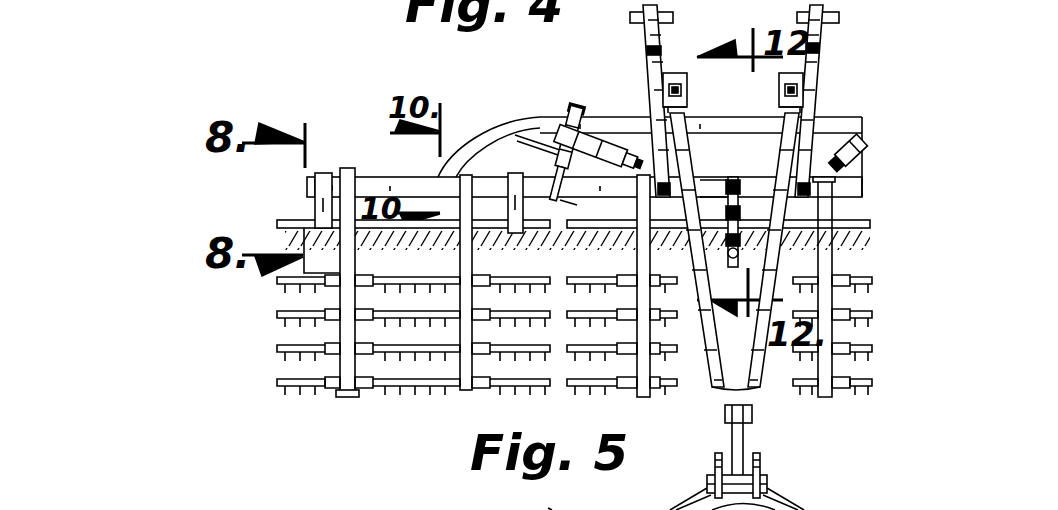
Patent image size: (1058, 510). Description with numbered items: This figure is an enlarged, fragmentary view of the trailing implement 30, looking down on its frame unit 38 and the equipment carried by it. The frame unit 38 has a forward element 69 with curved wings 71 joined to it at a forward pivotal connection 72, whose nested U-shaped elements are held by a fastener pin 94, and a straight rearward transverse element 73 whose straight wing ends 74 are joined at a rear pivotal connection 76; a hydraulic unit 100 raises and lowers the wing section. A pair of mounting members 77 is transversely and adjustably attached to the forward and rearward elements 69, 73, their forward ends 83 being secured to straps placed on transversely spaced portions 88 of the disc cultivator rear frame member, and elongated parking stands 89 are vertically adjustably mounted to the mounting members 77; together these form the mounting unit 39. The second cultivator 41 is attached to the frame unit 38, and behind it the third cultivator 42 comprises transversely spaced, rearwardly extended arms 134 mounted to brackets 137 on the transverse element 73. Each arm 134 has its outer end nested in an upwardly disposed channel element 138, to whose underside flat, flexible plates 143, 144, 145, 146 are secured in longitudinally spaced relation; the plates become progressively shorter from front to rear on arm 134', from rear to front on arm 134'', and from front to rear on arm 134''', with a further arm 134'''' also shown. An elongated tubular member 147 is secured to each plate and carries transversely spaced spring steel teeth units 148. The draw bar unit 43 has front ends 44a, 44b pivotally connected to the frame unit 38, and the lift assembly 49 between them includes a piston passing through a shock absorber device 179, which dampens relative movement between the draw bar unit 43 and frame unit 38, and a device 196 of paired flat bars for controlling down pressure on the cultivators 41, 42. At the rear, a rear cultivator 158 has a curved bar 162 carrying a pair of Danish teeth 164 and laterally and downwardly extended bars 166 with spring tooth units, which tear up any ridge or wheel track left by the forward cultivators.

The implement 30 is at (452, 79).
The frame unit 38 is at (869, 89).
The mounting unit 39 is at (849, 47).
The second cultivator 41 is at (274, 211).
The third cultivator 42 is at (274, 396).
The draw bar unit 43 is at (707, 392).
The front end of draw bar unit 44a is at (668, 107).
The front end of draw bar unit 44b is at (800, 110).
The lift assembly 49 is at (717, 204).
The forward element 69 is at (718, 119).
The curved wings 71 is at (478, 145).
The forward pivotal connection 72 is at (566, 105).
The rearward transverse element 73 is at (762, 179).
The wing ends 74 is at (382, 184).
The rear pivotal connection 76 is at (574, 203).
The mounting members 77 is at (647, 58).
The forward ends of mounting members 83 is at (660, 43).
The transversely spaced portions 88 is at (633, 22).
The parking stands 89 is at (663, 82).
The fastener pin 94 is at (548, 509).
The hydraulic unit 100 is at (617, 142).
The arms 134 is at (876, 238).
The arm 134' is at (387, 245).
The arm 134'' is at (531, 282).
The arm 134''' is at (616, 305).
The vertical post 134'''' is at (845, 367).
The brackets 137 is at (330, 173).
The channel element 138 is at (343, 397).
The flexible plate 143 is at (323, 283).
The flexible plate 144 is at (320, 316).
The flexible plate 145 is at (322, 350).
The flexible plate 146 is at (330, 391).
The tubular member 147 is at (447, 352).
The spring steel teeth units 148 is at (375, 388).
The rear cultivator 158 is at (789, 482).
The curved bar 162 is at (745, 436).
The Danish teeth 164 is at (716, 458).
The laterally and downwardly extended bars 166 is at (650, 507).
The shock absorber device 179 is at (749, 239).
The down pressure control device 196 is at (738, 168).